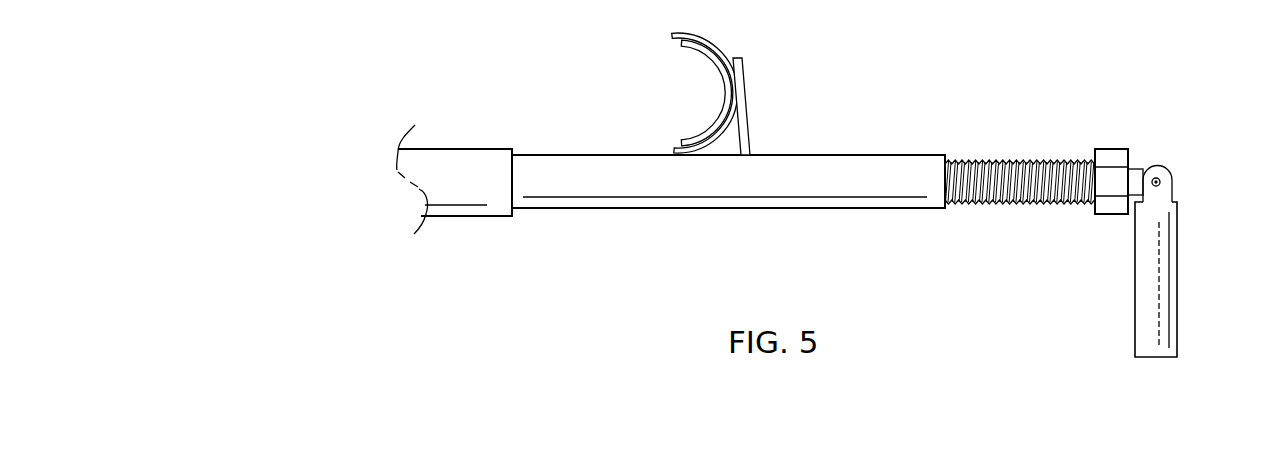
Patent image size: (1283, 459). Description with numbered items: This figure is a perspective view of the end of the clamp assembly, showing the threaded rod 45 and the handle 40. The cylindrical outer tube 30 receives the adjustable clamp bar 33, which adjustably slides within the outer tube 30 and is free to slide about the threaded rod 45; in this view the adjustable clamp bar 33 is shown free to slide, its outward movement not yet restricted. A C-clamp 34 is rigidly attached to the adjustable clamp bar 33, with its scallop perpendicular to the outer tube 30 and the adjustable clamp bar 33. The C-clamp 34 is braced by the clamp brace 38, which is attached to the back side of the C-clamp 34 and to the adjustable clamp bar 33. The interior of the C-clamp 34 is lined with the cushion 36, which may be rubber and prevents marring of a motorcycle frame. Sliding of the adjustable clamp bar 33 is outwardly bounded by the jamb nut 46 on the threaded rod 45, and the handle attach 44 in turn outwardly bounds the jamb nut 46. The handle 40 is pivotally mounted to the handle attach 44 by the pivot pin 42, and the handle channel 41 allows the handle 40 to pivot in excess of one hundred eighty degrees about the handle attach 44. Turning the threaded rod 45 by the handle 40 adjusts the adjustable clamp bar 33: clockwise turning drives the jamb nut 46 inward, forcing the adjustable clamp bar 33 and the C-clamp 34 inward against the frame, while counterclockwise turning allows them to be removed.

The outer tube 30 is at (470, 217).
The adjustable clamp bar 33 is at (913, 158).
The C-clamp 34 is at (722, 129).
The cushion 36 is at (692, 48).
The clamp brace 38 is at (745, 62).
The handle 40 is at (1168, 272).
The handle channel 41 is at (1126, 230).
The pivot pin 42 is at (1160, 181).
The handle attach 44 is at (1138, 169).
The threaded rod 45 is at (1025, 163).
The jamb nut 46 is at (1115, 149).